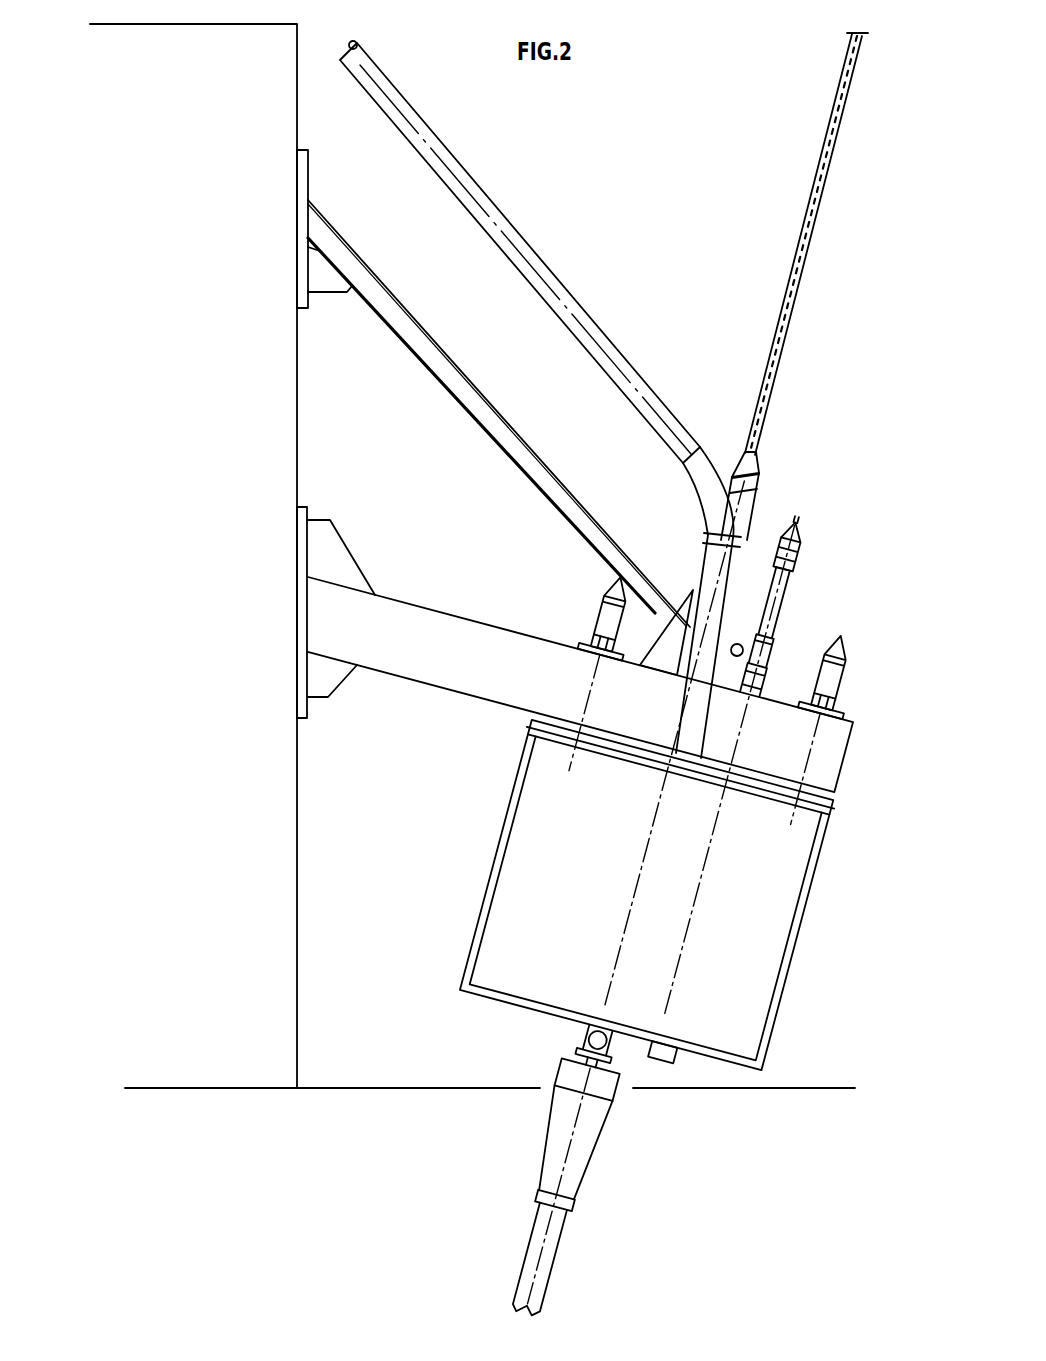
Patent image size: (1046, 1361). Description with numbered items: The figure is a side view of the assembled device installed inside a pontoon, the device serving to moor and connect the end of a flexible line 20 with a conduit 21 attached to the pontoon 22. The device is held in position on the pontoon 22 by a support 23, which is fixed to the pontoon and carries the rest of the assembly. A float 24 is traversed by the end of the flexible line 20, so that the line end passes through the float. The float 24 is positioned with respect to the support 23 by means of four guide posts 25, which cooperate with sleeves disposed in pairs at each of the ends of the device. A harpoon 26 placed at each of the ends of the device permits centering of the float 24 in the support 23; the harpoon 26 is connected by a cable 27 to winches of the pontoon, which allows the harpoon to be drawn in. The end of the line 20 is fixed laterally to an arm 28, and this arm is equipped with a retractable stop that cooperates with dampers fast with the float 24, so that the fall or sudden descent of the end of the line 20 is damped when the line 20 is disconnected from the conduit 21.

The flexible line 20 is at (553, 1232).
The conduit 21 is at (494, 203).
The pontoon 22 is at (229, 214).
The support 23 is at (480, 432).
The float 24 is at (505, 836).
The guide posts 25 is at (598, 623).
The harpoon 26 is at (740, 516).
The cable 27 is at (817, 182).
The arm 28 is at (780, 577).